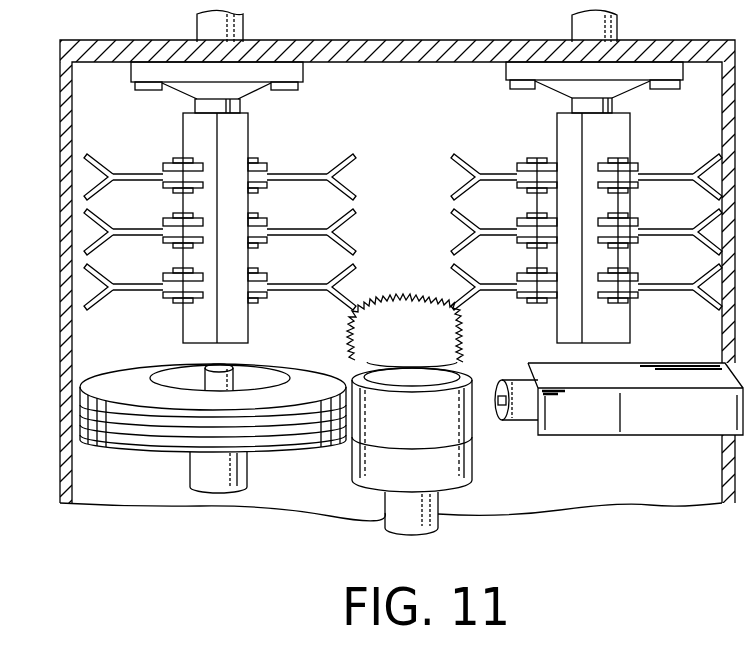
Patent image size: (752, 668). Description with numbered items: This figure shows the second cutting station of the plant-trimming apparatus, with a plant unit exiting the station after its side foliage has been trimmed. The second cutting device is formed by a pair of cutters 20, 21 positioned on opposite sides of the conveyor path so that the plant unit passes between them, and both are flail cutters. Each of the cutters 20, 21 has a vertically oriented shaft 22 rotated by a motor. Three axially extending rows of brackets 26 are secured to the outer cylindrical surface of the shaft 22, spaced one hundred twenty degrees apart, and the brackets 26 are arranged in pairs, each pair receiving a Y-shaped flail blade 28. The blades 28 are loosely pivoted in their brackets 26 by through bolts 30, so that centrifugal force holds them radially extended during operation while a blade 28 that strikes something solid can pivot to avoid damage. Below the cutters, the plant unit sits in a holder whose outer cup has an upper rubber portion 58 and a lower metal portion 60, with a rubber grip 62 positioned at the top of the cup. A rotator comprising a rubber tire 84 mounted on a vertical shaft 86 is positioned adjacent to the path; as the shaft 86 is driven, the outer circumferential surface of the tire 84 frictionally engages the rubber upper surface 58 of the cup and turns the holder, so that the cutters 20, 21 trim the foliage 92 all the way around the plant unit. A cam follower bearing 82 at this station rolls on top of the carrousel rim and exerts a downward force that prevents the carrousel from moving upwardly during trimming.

The cutter 20 is at (103, 138).
The cutter 21 is at (501, 155).
The vertically oriented shaft 22 is at (240, 143).
The bracket 26 is at (165, 300).
The Y-shaped flail blade 28 is at (112, 177).
The through bolt 30 is at (174, 248).
The upper rubber portion 58 is at (427, 426).
The lower metal portion 60 is at (427, 480).
The rubber grip 62 is at (465, 373).
The cam follower bearing 82 is at (523, 420).
The rubber tire 84 is at (150, 448).
The vertical shaft 86 is at (226, 471).
The foliage 92 is at (396, 322).